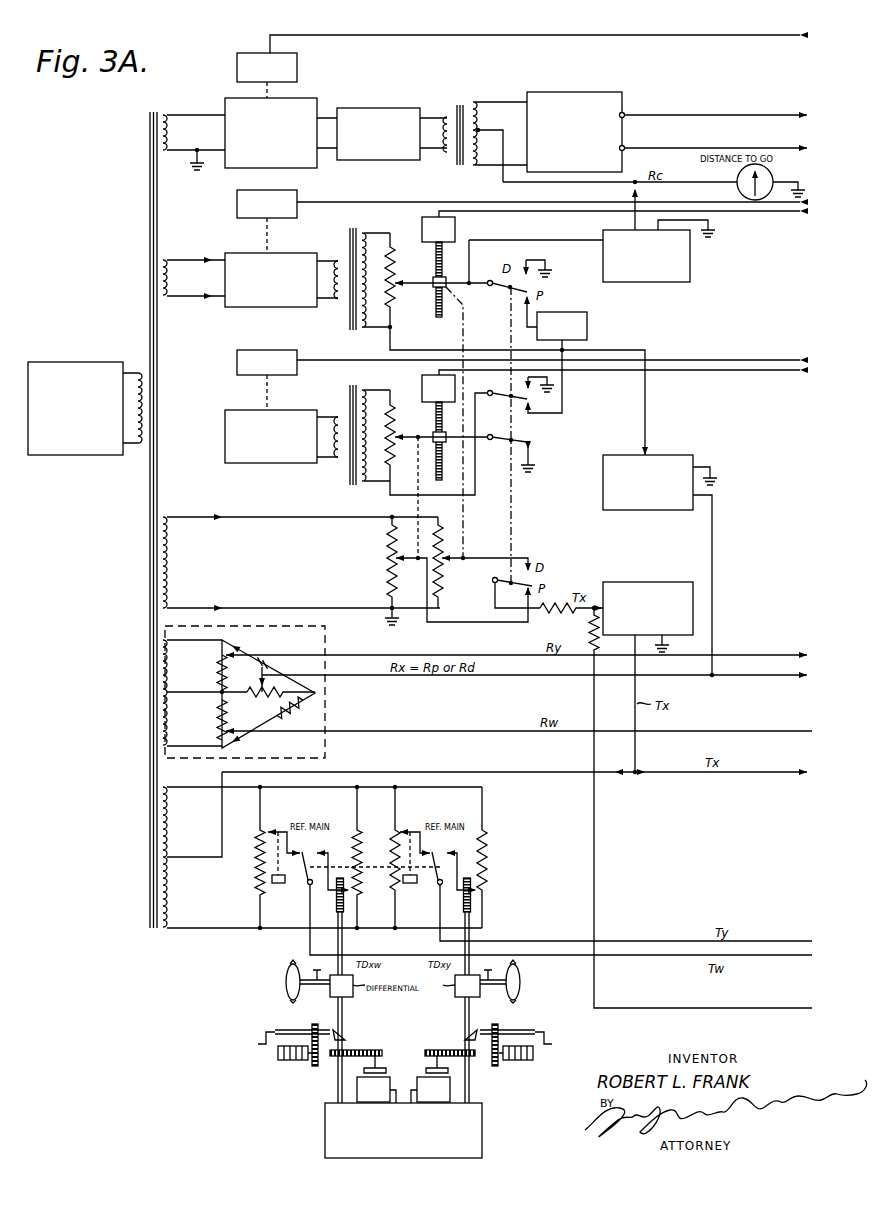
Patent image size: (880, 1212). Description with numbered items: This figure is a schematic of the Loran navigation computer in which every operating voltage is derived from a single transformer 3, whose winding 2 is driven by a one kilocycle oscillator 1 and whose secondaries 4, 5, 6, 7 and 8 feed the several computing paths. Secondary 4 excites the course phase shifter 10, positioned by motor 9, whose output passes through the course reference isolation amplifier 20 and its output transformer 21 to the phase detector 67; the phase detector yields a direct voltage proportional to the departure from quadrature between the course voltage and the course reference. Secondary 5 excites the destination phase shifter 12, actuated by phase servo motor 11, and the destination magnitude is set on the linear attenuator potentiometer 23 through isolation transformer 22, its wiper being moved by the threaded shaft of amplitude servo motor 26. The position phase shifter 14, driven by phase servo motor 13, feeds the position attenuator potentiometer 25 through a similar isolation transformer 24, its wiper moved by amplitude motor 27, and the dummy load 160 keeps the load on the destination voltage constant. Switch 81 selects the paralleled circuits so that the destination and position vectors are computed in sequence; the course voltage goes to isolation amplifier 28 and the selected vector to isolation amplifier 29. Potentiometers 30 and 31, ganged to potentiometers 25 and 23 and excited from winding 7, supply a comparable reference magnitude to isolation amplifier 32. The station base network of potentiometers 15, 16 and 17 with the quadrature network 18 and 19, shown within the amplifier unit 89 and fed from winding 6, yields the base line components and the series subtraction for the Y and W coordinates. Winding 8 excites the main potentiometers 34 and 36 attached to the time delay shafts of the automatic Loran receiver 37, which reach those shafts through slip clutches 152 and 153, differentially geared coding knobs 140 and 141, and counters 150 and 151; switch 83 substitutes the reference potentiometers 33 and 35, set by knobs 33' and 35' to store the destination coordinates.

The oscillator 1 is at (72, 362).
The winding 2 is at (135, 445).
The transformer 3 is at (158, 472).
The secondary 4 is at (170, 113).
The secondary 5 is at (168, 258).
The winding 6 is at (176, 672).
The winding 7 is at (178, 568).
The winding 8 is at (180, 888).
The motor 9 is at (299, 67).
The phase shifter 10 is at (308, 98).
The phase servo motor 11 is at (300, 194).
The phase shifter 12 is at (286, 253).
The phase servo motor 13 is at (292, 350).
The phase shifter 14 is at (247, 410).
The potentiometer 15 is at (218, 668).
The potentiometer 16 is at (218, 726).
The potentiometer 17 is at (264, 696).
The network element 18 is at (270, 662).
The network element 19 is at (303, 718).
The isolation amplifier 20 is at (400, 108).
The output transformer 21 is at (460, 100).
The isolation transformer 22 is at (345, 247).
The potentiometer 23 is at (393, 244).
The isolation transformer 24 is at (350, 384).
The potentiometer 25 is at (400, 384).
The amplitude servo motor 26 is at (457, 229).
The amplitude servo motor 27 is at (457, 383).
The isolation amplifier 28 is at (692, 273).
The isolation amplifier 29 is at (675, 455).
The potentiometer 30 is at (387, 555).
The potentiometer 31 is at (445, 582).
The isolation amplifier 32 is at (668, 582).
The reference potentiometer 33 is at (259, 857).
The knob 33' is at (282, 876).
The main potentiometer 34 is at (362, 830).
The reference potentiometer 35 is at (396, 857).
The knob 35' is at (433, 876).
The main potentiometer 36 is at (486, 866).
The automatic Loran receiver 37 is at (484, 1128).
The phase detector 67 is at (580, 92).
The switch 81 is at (513, 497).
The switch 83 is at (370, 868).
The amplifier unit 89 is at (325, 752).
The calibrated knob 140 is at (286, 981).
The calibrated knob 141 is at (522, 977).
The counter 150 is at (292, 1058).
The counter 151 is at (515, 1058).
The slip clutch 152 is at (380, 1068).
The slip clutch 153 is at (421, 1074).
The dummy load 160 is at (587, 327).